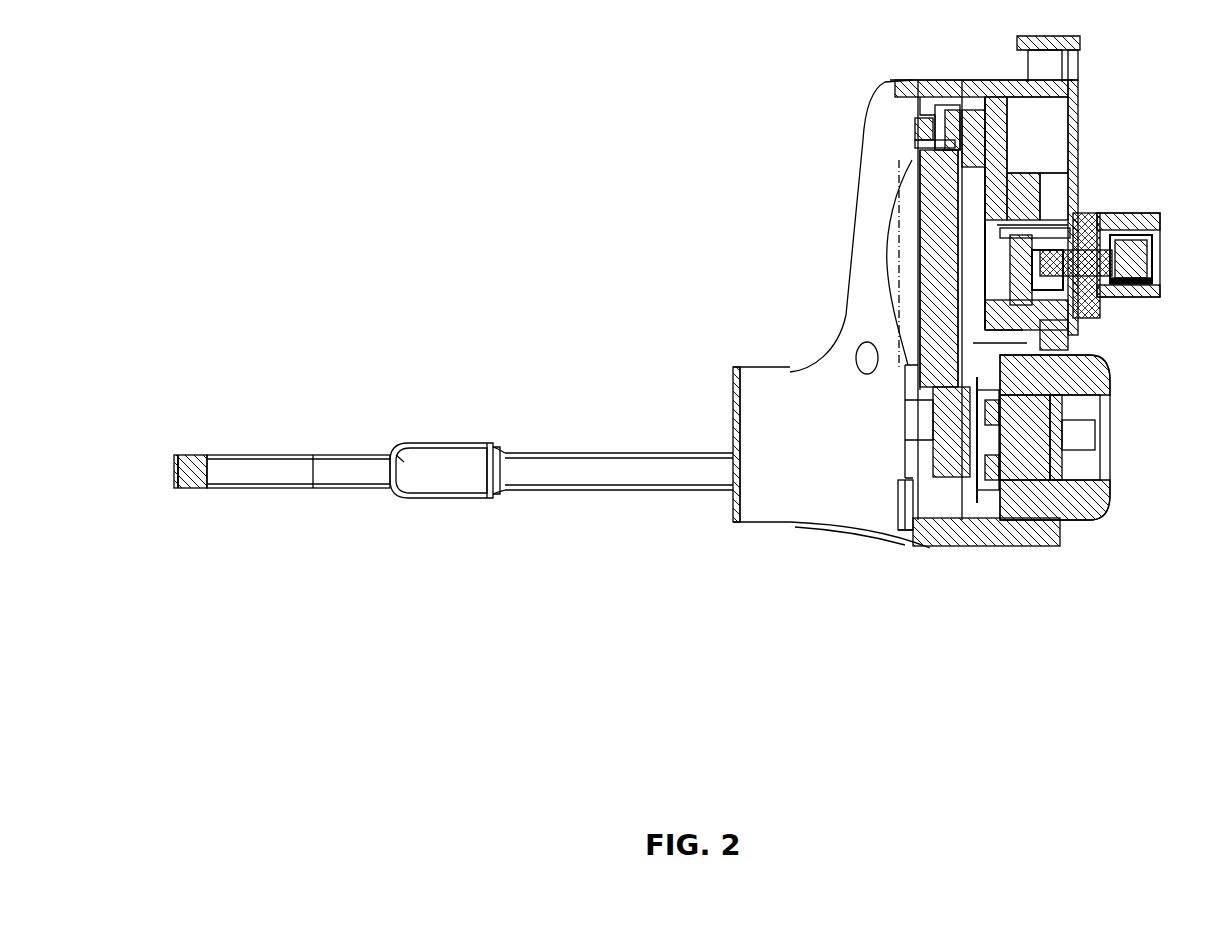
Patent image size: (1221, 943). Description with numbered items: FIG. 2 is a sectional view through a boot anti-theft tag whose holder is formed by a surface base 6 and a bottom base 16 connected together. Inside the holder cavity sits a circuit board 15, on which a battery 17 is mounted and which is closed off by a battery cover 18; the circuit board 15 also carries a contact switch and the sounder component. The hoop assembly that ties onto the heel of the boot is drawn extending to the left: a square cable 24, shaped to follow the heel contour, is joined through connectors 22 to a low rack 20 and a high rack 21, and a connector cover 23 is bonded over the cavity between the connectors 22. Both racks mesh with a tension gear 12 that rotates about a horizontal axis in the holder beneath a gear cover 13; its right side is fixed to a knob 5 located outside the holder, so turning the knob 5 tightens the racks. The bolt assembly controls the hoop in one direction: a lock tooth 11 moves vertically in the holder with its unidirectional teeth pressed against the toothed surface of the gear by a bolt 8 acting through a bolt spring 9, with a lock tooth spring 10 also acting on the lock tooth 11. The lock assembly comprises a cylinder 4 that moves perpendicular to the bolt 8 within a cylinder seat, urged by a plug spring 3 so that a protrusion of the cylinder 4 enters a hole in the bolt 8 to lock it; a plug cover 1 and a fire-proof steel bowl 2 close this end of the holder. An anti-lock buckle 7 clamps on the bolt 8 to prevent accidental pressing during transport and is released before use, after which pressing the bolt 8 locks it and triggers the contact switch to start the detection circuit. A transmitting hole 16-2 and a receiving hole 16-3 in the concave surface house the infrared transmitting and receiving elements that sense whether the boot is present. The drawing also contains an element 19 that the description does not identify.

The plug cover 1 is at (1160, 220).
The fire-proof steel bowl 2 is at (1157, 240).
The plug spring 3 is at (1153, 255).
The cylinder 4 is at (1152, 280).
The knob 5 is at (1107, 390).
The surface base 6 is at (1085, 222).
The anti-lock buckle 7 is at (1082, 63).
The bolt 8 is at (1078, 42).
The bolt spring 9 is at (1078, 333).
The lock tooth spring 10 is at (1123, 287).
The lock tooth 11 is at (1047, 350).
The tension gear 12 is at (1107, 433).
The gear cover 13 is at (905, 523).
The circuit board 15 is at (970, 153).
The bottom base 16 is at (648, 447).
The transmitting hole 16-2 is at (907, 455).
The receiving hole 16-3 is at (907, 417).
The battery 17 is at (937, 240).
The battery cover 18 is at (907, 270).
The retainer 19 is at (915, 152).
The low rack 20 is at (768, 410).
The high rack 21 is at (1030, 430).
The connector 22 is at (417, 443).
The connector cover 23 is at (400, 463).
The square cable 24 is at (278, 465).